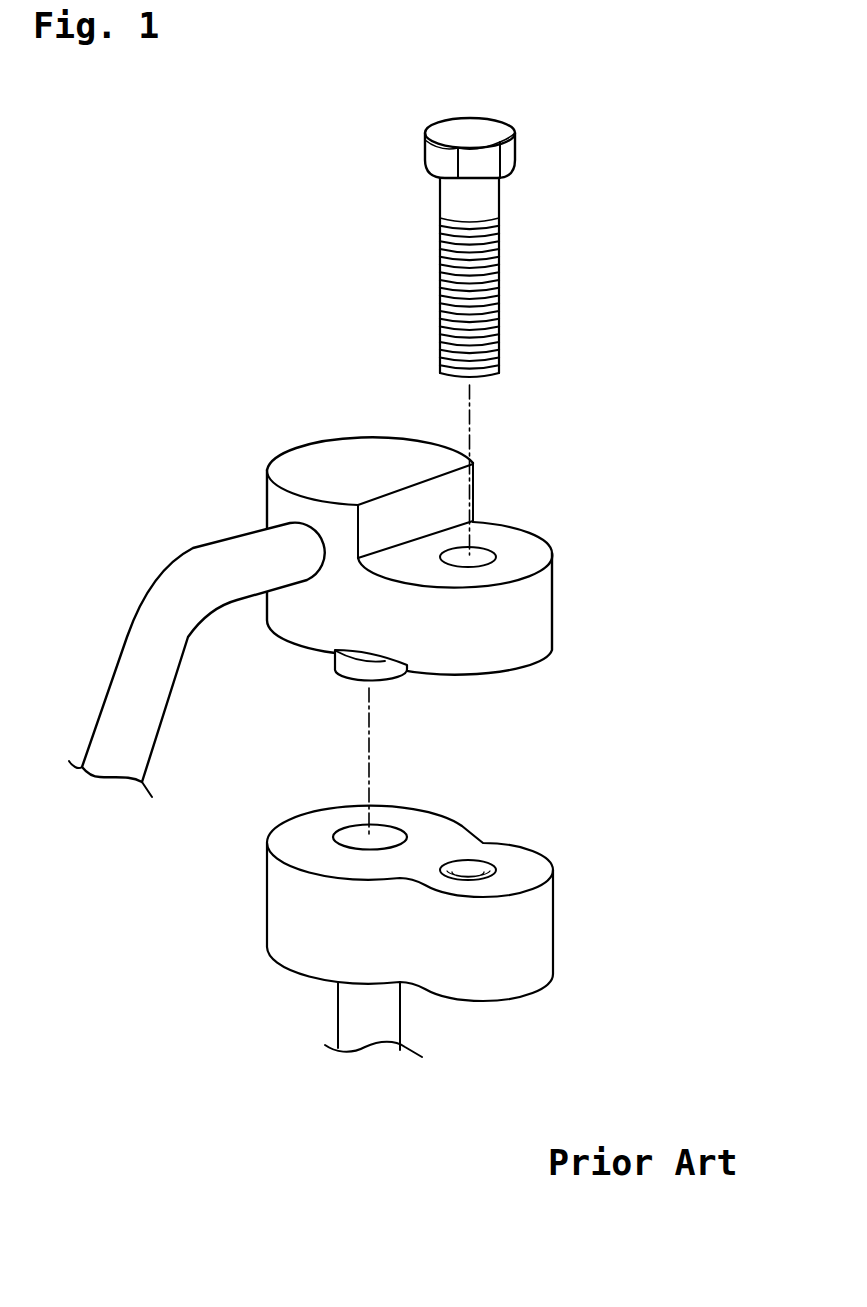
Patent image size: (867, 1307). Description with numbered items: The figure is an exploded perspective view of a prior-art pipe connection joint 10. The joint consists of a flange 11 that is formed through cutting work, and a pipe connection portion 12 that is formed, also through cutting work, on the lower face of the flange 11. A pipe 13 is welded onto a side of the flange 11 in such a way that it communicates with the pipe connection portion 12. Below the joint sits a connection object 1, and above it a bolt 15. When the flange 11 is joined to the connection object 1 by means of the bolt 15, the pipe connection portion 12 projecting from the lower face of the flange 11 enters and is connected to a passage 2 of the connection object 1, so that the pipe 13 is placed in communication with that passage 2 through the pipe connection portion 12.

The connection object 1 is at (297, 907).
The passage 2 is at (352, 836).
The pipe connection joint 10 is at (389, 476).
The flange 11 is at (527, 618).
The pipe connection portion 12 is at (350, 670).
The pipe 13 is at (218, 568).
The bolt 15 is at (480, 198).